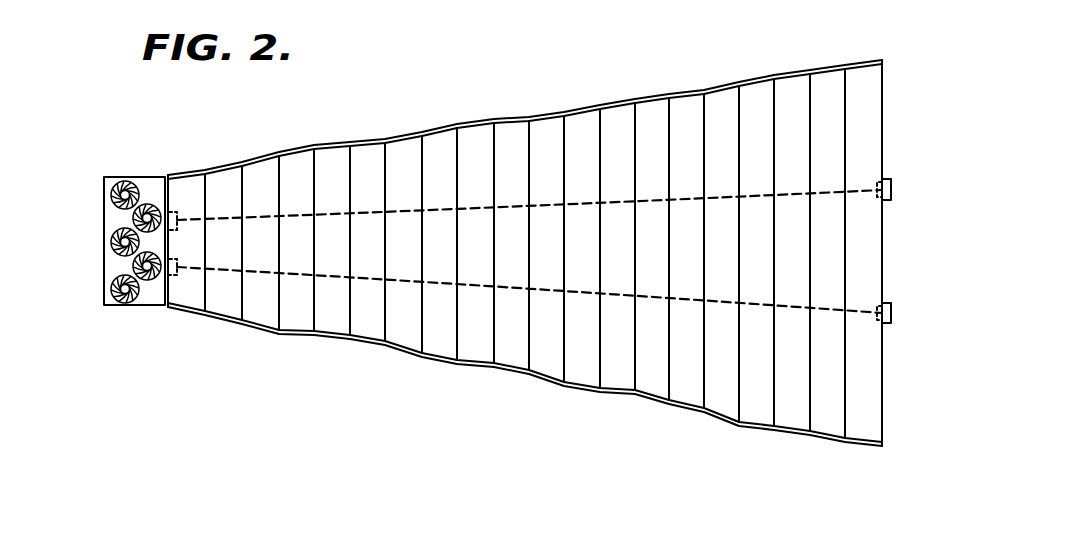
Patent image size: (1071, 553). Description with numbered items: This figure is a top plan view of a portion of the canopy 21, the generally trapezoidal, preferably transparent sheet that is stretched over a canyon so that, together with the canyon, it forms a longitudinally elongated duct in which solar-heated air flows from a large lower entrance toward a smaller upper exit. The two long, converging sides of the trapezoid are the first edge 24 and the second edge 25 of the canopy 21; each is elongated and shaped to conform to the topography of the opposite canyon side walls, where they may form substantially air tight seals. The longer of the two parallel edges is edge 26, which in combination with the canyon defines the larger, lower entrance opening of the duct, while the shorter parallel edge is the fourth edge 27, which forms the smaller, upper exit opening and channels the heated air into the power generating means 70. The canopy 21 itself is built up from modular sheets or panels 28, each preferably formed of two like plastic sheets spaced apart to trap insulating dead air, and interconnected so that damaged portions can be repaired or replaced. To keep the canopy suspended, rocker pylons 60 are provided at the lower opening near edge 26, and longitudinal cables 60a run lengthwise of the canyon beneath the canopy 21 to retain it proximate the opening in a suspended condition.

The canopy 21 is at (553, 275).
The first edge 24 is at (530, 118).
The second edge 25 is at (550, 383).
The edge 26 is at (882, 256).
The fourth edge 27 is at (114, 254).
The modular sheets or panels 28 is at (325, 157).
The rocker pylons 60 is at (889, 186).
The longitudinal cables 60a is at (642, 292).
The power generating means 70 is at (125, 250).